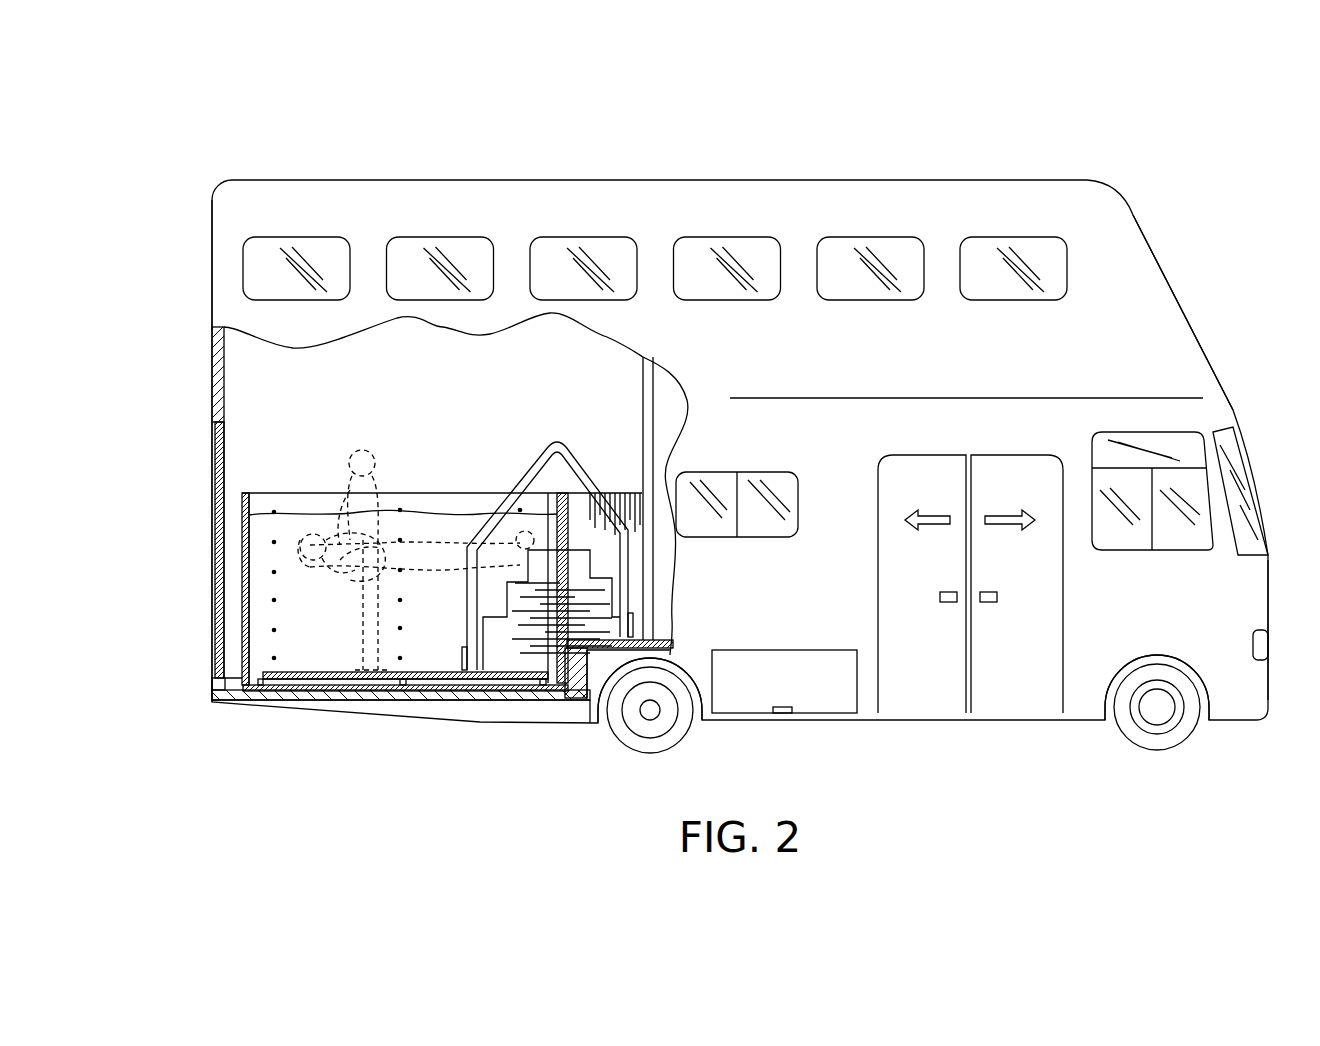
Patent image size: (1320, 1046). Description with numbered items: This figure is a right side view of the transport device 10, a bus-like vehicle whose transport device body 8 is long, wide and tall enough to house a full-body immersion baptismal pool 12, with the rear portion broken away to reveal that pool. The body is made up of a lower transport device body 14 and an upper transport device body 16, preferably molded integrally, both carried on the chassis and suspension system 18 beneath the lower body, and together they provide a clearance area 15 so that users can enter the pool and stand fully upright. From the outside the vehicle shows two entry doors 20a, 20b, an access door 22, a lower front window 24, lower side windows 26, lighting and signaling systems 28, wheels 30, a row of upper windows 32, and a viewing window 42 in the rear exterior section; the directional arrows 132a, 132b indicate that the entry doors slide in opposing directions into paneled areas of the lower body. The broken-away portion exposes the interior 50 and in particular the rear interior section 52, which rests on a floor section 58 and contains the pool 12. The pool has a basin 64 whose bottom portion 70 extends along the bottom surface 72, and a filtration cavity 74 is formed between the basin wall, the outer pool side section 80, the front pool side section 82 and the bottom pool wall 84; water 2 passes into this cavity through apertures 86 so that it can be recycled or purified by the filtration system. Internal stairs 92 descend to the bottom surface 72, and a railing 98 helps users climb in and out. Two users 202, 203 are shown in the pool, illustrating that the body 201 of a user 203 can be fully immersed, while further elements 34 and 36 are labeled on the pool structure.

The water 2 is at (300, 515).
The transport device body 8 is at (210, 265).
The transport device 10 is at (1173, 176).
The full-body immersion baptismal pool 12 is at (416, 592).
The lower transport device body 14 is at (1270, 613).
The clearance area 15 is at (277, 388).
The upper transport device body 16 is at (1180, 296).
The chassis and suspension system 18 is at (703, 722).
The entry door 20a is at (928, 690).
The entry door 20b is at (1028, 690).
The access door 22 is at (808, 697).
The lower front window 24 is at (1240, 470).
The lower side window 26 is at (763, 522).
The lighting and signaling systems 28 is at (1263, 645).
The wheels 30 is at (632, 742).
The upper window 32 is at (306, 245).
The side wall 34 is at (215, 592).
The pool wall 36 is at (270, 577).
The viewing window 42 is at (215, 500).
The interior 50 is at (325, 384).
The rear interior section 52 is at (567, 380).
The floor section 58 is at (478, 702).
The basin 64 is at (240, 635).
The bottom portion 70 is at (304, 671).
The bottom surface 72 is at (424, 671).
The filtration cavity 74 is at (366, 701).
The outer pool side section 80 is at (255, 691).
The front pool side section 82 is at (583, 500).
The bottom pool wall 84 is at (295, 701).
The apertures 86 is at (400, 512).
The internal stairs 92 is at (490, 664).
The railings 98 is at (520, 470).
The directional arrow 132a is at (930, 515).
The directional arrow 132b is at (1010, 515).
The body 201 is at (338, 540).
The user 202 is at (362, 450).
The user 203 is at (418, 560).